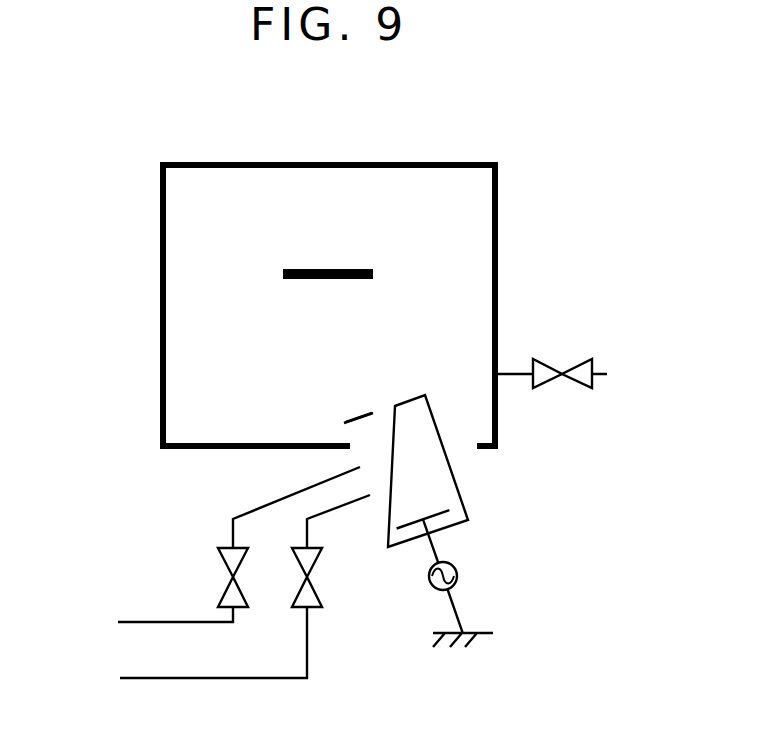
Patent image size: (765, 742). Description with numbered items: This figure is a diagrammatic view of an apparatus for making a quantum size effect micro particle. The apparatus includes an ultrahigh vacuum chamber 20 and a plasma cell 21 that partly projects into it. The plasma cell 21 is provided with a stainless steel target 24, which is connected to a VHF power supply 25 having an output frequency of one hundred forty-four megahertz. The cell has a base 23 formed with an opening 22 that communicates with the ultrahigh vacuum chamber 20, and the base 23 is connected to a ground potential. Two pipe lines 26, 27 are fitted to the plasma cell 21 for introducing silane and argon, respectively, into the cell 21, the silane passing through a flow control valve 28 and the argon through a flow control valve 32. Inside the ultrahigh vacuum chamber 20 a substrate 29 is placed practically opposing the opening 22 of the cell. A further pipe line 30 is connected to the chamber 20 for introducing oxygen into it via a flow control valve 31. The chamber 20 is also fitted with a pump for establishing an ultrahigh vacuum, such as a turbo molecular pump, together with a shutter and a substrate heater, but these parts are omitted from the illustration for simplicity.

The ultrahigh vacuum chamber 20 is at (498, 240).
The plasma cell 21 is at (460, 485).
The opening 22 is at (385, 408).
The base 23 is at (358, 416).
The stainless steel target 24 is at (408, 530).
The VHF power supply 25 is at (453, 567).
The pipe line 26 is at (312, 483).
The pipe line 27 is at (345, 508).
The flow control valve 28 is at (223, 592).
The substrate 29 is at (321, 268).
The pipe line 30 is at (510, 372).
The flow control valve 31 is at (567, 365).
The flow control valve 32 is at (295, 590).